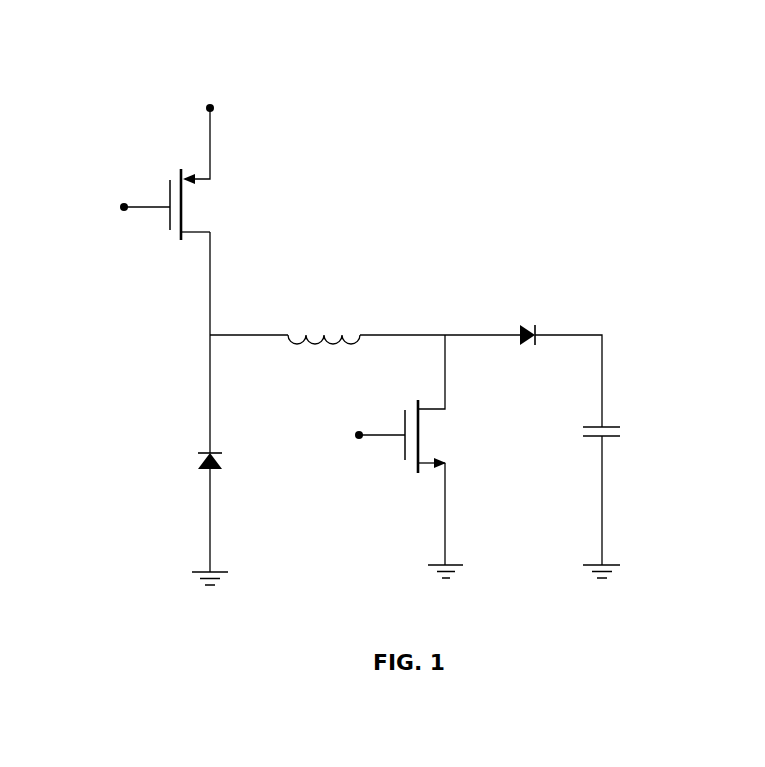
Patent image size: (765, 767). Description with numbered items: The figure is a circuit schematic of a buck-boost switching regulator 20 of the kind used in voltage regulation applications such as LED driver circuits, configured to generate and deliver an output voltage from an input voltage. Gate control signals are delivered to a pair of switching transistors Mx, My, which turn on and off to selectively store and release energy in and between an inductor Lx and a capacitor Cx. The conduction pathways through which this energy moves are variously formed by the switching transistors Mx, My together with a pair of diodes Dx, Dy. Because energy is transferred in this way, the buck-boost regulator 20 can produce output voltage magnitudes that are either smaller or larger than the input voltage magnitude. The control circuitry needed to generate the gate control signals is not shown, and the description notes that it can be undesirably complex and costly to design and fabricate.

The buck-boost switching regulator 20 is at (118, 45).
The switching transistor My is at (210, 204).
The switching transistor Mx is at (445, 436).
The inductor Lx is at (324, 354).
The diode Dx is at (531, 352).
The diode Dy is at (191, 463).
The capacitor Cx is at (580, 431).